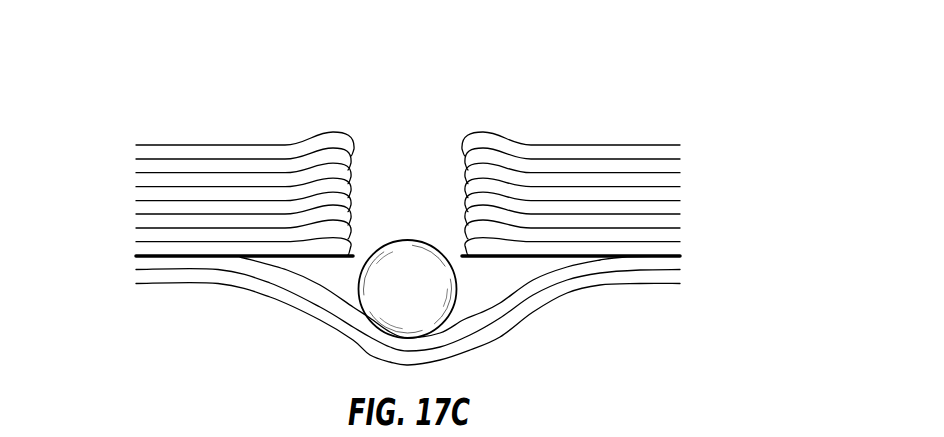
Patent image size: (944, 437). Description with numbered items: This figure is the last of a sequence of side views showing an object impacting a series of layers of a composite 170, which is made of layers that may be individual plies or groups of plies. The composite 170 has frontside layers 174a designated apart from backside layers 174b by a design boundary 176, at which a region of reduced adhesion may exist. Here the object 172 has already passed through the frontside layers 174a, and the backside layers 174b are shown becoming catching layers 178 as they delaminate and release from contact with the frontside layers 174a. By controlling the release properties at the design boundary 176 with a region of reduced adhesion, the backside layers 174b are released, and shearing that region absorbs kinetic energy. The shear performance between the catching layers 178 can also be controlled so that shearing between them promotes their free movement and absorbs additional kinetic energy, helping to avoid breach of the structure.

The composite 170 is at (684, 73).
The object 172 is at (406, 239).
The frontside layers 174a is at (695, 256).
The backside layers 174b is at (693, 291).
The design boundary 176 is at (126, 254).
The catching layers 178 is at (547, 297).